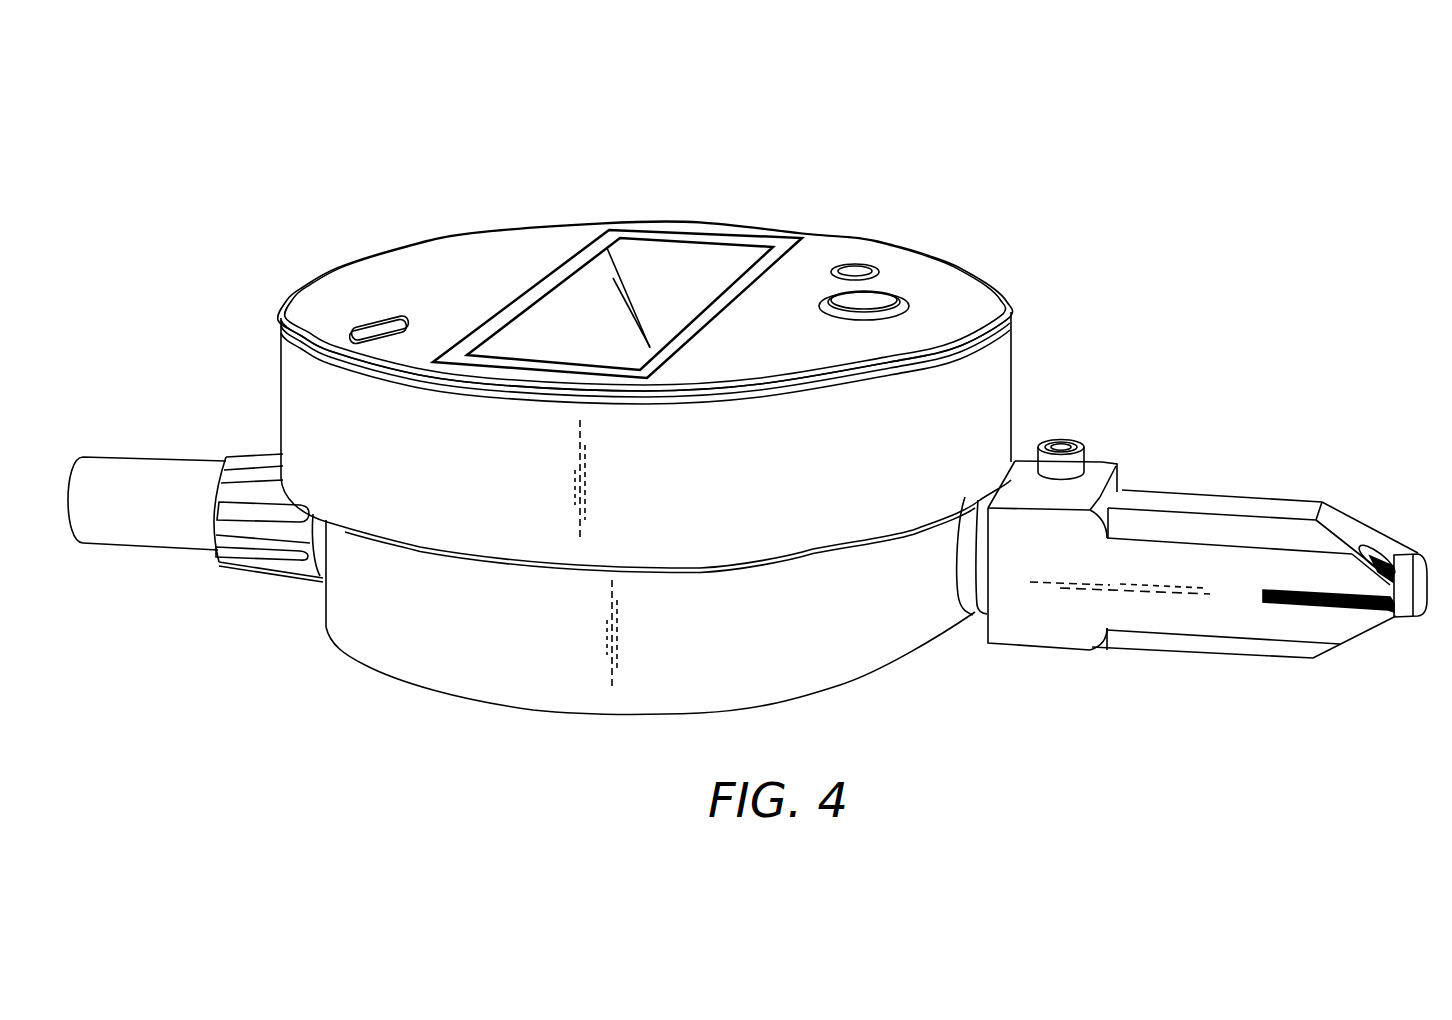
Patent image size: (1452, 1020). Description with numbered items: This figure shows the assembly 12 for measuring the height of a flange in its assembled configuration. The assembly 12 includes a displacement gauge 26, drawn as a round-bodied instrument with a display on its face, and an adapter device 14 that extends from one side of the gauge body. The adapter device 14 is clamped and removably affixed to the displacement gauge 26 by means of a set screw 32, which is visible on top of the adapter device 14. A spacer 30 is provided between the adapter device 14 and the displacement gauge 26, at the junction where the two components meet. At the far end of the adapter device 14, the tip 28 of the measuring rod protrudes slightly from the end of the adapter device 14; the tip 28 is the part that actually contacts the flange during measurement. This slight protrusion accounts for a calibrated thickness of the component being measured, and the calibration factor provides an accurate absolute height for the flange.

The assembly 12 is at (1096, 148).
The adapter device 14 is at (1302, 482).
The displacement gauge 26 is at (899, 172).
The tip 28 is at (1414, 652).
The spacer 30 is at (995, 480).
The set screw 32 is at (1099, 429).